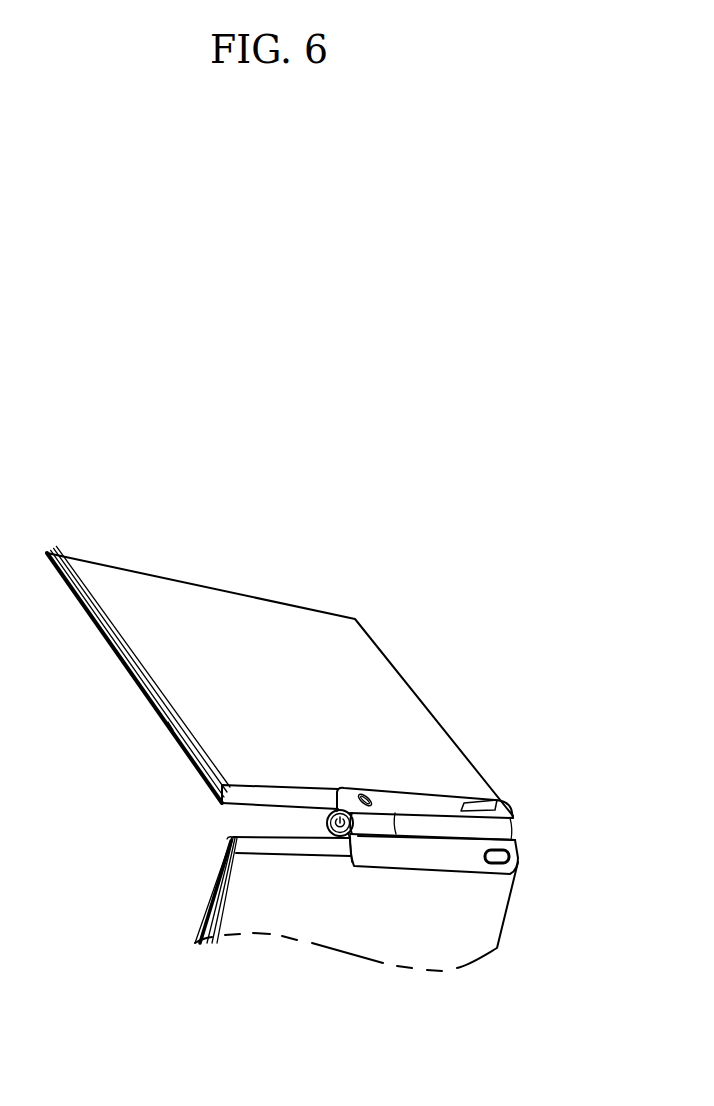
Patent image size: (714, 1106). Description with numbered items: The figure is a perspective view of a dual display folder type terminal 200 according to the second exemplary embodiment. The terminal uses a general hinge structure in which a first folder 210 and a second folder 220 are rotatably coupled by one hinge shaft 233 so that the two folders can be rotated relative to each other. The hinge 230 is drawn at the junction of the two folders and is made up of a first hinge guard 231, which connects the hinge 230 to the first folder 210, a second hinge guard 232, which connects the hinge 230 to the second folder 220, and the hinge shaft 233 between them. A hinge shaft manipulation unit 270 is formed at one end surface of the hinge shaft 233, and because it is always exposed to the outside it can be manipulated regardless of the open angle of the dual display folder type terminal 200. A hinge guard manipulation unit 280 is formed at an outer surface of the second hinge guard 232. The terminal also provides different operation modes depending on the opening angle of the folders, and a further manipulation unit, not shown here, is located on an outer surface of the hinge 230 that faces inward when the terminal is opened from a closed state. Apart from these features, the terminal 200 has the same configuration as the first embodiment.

The dual display folder type terminal 200 is at (535, 516).
The first folder 210 is at (383, 662).
The second folder 220 is at (473, 942).
The hinge 230 is at (600, 794).
The first hinge guard 231 is at (518, 813).
The second hinge guard 232 is at (513, 852).
The hinge shaft 233 is at (508, 832).
The hinge shaft manipulation unit 270 is at (327, 823).
The hinge guard manipulation unit 280 is at (507, 867).